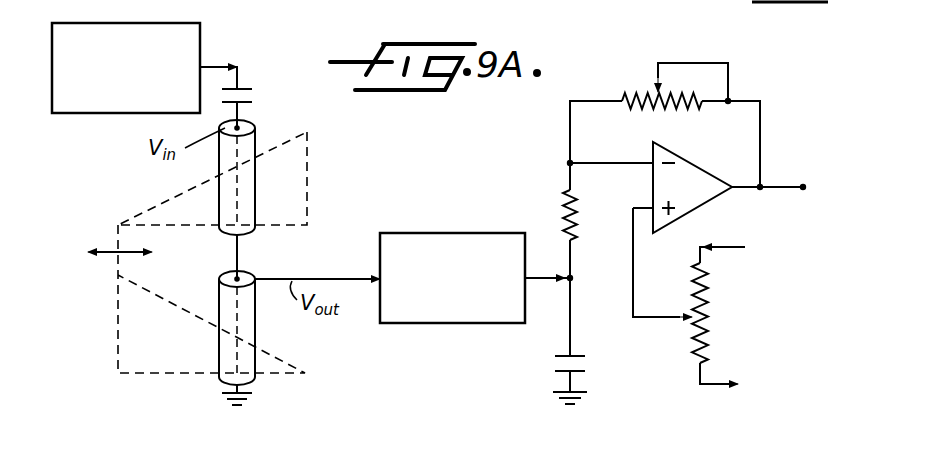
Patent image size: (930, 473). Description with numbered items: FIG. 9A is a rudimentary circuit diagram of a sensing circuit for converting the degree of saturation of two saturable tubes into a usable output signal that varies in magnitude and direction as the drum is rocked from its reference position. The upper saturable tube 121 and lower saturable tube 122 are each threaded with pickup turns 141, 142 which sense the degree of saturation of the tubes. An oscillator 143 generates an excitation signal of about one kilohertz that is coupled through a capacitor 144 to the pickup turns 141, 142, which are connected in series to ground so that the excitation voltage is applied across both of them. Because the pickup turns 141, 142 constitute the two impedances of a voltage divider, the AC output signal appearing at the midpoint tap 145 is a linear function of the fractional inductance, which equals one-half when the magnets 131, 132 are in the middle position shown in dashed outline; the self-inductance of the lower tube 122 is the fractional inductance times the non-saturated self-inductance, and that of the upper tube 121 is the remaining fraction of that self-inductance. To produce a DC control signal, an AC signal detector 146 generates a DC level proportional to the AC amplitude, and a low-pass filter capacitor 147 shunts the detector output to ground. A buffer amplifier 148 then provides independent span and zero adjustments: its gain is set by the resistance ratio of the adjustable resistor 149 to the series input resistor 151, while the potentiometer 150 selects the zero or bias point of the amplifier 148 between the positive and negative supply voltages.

The oscillator 143 is at (198, 33).
The capacitor 144 is at (252, 92).
The pickup turn 141 is at (260, 137).
The saturable tube 121 is at (257, 193).
The magnet 131 is at (309, 163).
The magnet 132 is at (115, 333).
The tap 145 is at (238, 278).
The saturable tube 122 is at (218, 290).
The pickup turn 142 is at (235, 352).
The AC signal detector 146 is at (485, 324).
The low-pass filter capacitor 147 is at (560, 372).
The series input resistor 151 is at (562, 203).
The adjustable resistor 149 is at (690, 110).
The buffer amplifier 148 is at (698, 205).
The potentiometer 150 is at (690, 343).